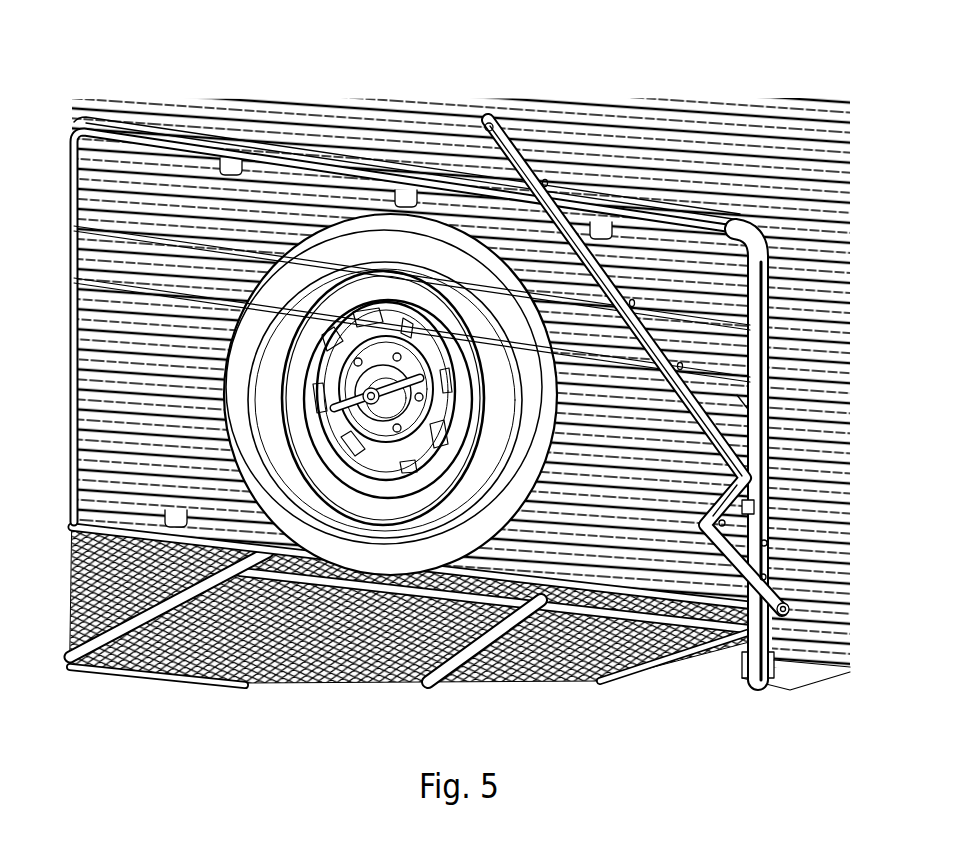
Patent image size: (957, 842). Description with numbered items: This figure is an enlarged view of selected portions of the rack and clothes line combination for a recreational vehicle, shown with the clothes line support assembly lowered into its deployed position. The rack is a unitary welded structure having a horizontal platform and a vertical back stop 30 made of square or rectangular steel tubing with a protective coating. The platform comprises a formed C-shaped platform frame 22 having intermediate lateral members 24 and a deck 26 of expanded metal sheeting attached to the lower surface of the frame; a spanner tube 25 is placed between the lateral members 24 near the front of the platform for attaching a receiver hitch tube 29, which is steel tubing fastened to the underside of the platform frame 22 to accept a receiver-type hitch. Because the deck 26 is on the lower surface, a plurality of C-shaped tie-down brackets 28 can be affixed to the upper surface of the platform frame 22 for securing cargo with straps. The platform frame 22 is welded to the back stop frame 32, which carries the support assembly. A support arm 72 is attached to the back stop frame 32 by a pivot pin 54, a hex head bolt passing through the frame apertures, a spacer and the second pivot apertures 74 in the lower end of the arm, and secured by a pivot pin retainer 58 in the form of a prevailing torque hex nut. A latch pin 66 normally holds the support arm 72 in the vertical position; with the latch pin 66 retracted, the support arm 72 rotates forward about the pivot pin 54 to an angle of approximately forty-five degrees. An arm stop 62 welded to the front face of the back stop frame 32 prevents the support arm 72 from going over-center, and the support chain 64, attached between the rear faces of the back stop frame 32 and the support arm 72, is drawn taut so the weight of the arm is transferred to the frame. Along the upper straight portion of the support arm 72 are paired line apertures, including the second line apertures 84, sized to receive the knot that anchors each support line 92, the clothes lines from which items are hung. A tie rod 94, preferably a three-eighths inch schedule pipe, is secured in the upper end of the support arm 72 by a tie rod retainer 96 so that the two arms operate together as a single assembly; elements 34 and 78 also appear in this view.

The platform frame 22 is at (717, 660).
The intermediate lateral members 24 is at (441, 684).
The spanner tube 25 is at (260, 682).
The deck 26 is at (558, 685).
The tie-down brackets 28 is at (612, 226).
The receiver hitch tube 29 is at (343, 682).
The vertical back stop 30 is at (390, 394).
The back stop frame 32 is at (770, 283).
The horizontal rails 34 is at (412, 304).
The pivot pin 54 is at (790, 608).
The pivot pin retainer 58 is at (786, 614).
The arm stop 62 is at (754, 507).
The support chain 64 is at (725, 523).
The latch pin 66 is at (767, 543).
The support arm 72 is at (735, 400).
The second pivot apertures 74 is at (766, 577).
The link 78 is at (742, 495).
The second line apertures 84 is at (684, 367).
The support lines 92 is at (527, 170).
The tie rod 94 is at (342, 108).
The tie rod retainer 96 is at (497, 130).